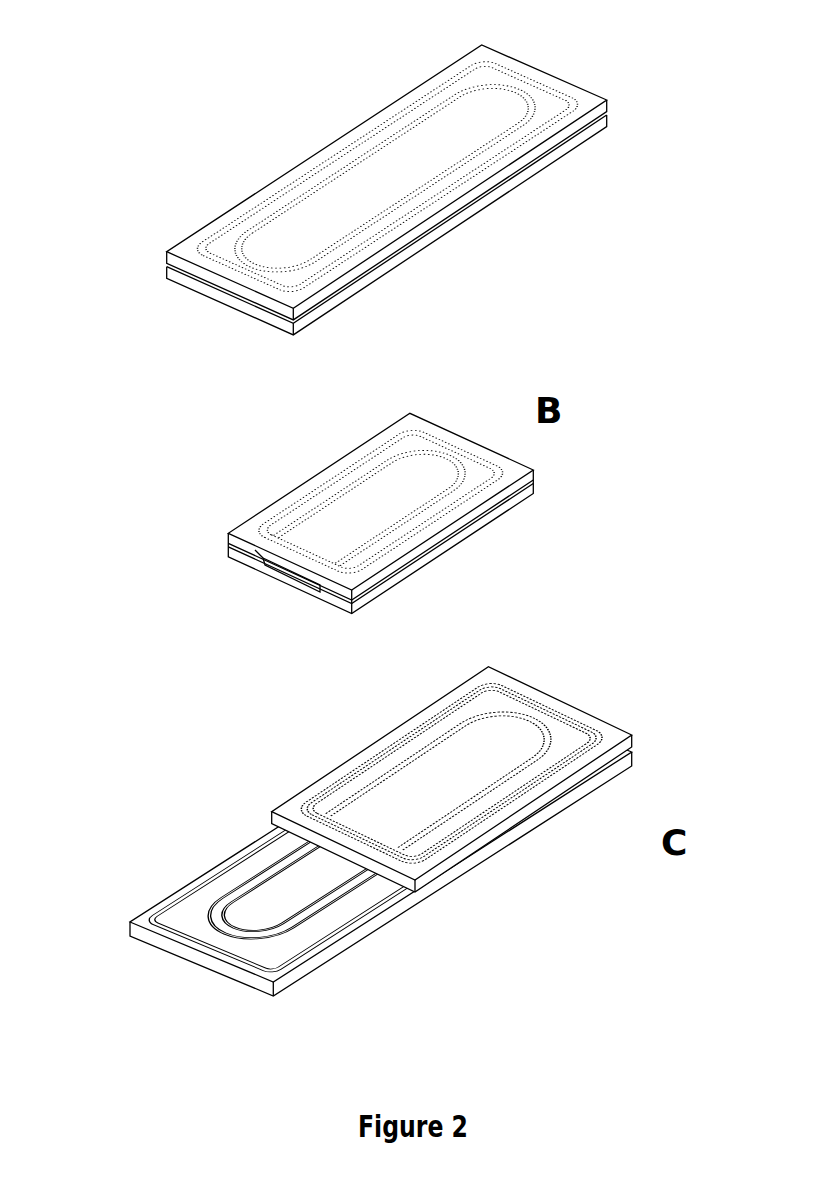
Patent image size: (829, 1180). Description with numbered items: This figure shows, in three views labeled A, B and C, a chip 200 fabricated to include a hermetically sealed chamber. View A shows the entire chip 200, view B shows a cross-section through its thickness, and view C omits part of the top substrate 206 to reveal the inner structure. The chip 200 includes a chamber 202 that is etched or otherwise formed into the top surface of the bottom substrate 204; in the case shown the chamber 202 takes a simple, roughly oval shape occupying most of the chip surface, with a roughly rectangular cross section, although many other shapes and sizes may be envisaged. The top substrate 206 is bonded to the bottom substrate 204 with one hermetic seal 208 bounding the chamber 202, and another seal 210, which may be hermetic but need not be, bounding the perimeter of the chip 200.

The chip 200 is at (183, 104).
The chamber 202 is at (417, 175).
The bottom substrate 204 is at (502, 202).
The top substrate 206 is at (563, 82).
The hermetic seal 208 is at (267, 868).
The seal 210 is at (267, 975).